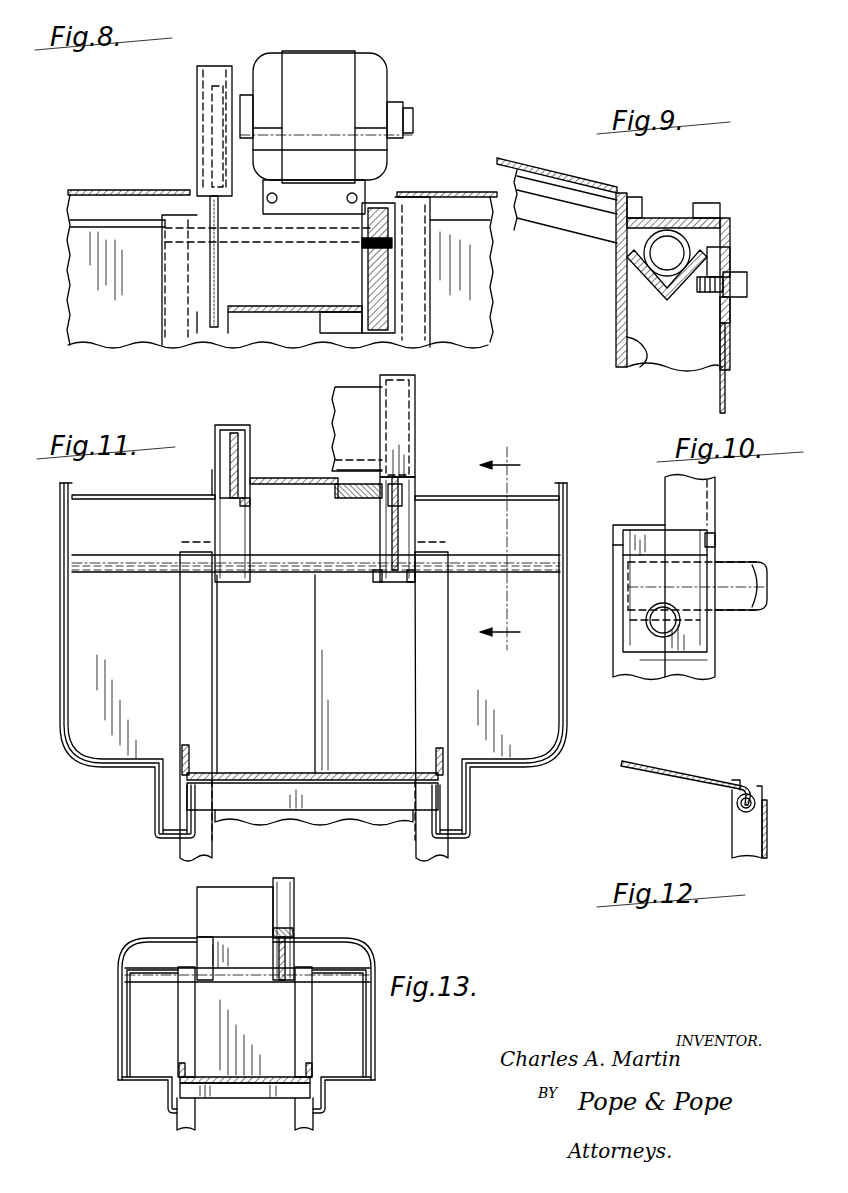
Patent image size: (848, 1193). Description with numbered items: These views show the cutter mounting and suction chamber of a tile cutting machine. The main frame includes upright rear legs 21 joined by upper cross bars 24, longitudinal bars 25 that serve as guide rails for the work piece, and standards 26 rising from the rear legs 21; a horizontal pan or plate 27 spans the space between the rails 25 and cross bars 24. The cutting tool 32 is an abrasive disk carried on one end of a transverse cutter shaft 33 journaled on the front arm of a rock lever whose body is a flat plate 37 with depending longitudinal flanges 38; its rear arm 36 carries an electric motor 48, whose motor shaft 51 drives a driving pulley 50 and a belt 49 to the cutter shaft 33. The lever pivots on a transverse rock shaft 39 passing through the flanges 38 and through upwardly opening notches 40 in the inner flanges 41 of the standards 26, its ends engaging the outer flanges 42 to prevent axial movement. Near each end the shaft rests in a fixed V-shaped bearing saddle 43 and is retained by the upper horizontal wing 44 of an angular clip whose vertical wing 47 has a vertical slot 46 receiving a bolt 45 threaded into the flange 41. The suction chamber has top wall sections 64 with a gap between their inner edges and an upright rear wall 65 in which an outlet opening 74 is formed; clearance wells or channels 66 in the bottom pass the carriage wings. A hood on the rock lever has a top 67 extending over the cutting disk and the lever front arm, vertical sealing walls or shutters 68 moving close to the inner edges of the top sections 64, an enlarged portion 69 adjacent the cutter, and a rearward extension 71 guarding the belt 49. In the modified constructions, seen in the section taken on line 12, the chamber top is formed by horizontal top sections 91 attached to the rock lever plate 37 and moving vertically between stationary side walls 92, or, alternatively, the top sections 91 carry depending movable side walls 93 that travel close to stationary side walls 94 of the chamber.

In FIG. 11, the section line 12 is at (500, 547).
In FIG. 11, the upright rear legs 21 is at (207, 838).
In FIG. 13, the upright rear legs 21 is at (178, 1125).
In FIG. 11, the upper front and rear cross bars 24 is at (312, 804).
In FIG. 13, the upper front and rear cross bars 24 is at (208, 1099).
In FIG. 11, the upper longitudinal parallel bars 25 is at (188, 745).
In FIG. 13, the upper longitudinal parallel bars 25 is at (186, 1065).
In FIG. 8, the standards 26 is at (167, 325).
In FIG. 9, the standards 26 is at (633, 370).
In FIG. 10, the standards 26 is at (697, 680).
In FIG. 12, the standards 26 is at (737, 837).
In FIG. 11, the standards 26 is at (183, 658).
In FIG. 13, the standards 26 is at (180, 998).
In FIG. 11, the horizontal pan or plate 27 is at (282, 773).
In FIG. 13, the horizontal pan or plate 27 is at (264, 1085).
In FIG. 11, the cutting tool 32 is at (401, 534).
In FIG. 13, the cutting tool 32 is at (288, 962).
In FIG. 11, the cutter shaft 33 is at (360, 500).
In FIG. 13, the cutter shaft 33 is at (273, 930).
In FIG. 8, the rear arm 36 is at (267, 253).
In FIG. 8, the flat plate 37 is at (311, 306).
In FIG. 11, the flat plate 37 is at (308, 482).
In FIG. 8, the longitudinal flanges 38 is at (227, 328).
In FIG. 11, the longitudinal flanges 38 is at (250, 500).
In FIG. 8, the rock shaft 39 is at (362, 244).
In FIG. 9, the rock shaft 39 is at (667, 253).
In FIG. 10, the rock shaft 39 is at (762, 575).
In FIG. 12, the rock shaft 39 is at (737, 805).
In FIG. 11, the rock shaft 39 is at (295, 574).
In FIG. 13, the rock shaft 39 is at (243, 983).
In FIG. 9, the notches 40 is at (695, 204).
In FIG. 10, the notches 40 is at (717, 533).
In FIG. 9, the inner flanges 41 is at (712, 214).
In FIG. 10, the inner flanges 41 is at (712, 556).
In FIG. 10, the outer flanges 42 is at (615, 565).
In FIG. 9, the V-shaped bearing saddle 43 is at (665, 295).
In FIG. 9, the upper horizontal wing 44 is at (650, 218).
In FIG. 9, the bolt 45 is at (747, 287).
In FIG. 9, the vertical slot 46 is at (721, 270).
In FIG. 9, the vertical wing 47 is at (730, 310).
In FIG. 8, the electric motor 48 is at (385, 68).
In FIG. 8, the belt 49 is at (220, 222).
In FIG. 11, the belt 49 is at (240, 440).
In FIG. 8, the driving pulley 50 is at (210, 90).
In FIG. 8, the motor shaft 51 is at (410, 120).
In FIG. 8, the top wall sections 64 is at (112, 190).
In FIG. 9, the top wall sections 64 is at (560, 165).
In FIG. 8, the rear wall 65 is at (70, 278).
In FIG. 9, the rear wall 65 is at (558, 228).
In FIG. 12, the rear wall 65 is at (767, 846).
In FIG. 11, the clearance wells or channels 66 is at (160, 812).
In FIG. 11, the hood top 67 is at (357, 429).
In FIG. 8, the sealing walls or shutters 68 is at (180, 258).
In FIG. 11, the sealing walls or shutters 68 is at (215, 466).
In FIG. 8, the enlarged hood portion 69 is at (386, 205).
In FIG. 11, the enlarged hood portion 69 is at (408, 408).
In FIG. 13, the enlarged hood portion 69 is at (285, 878).
In FIG. 8, the rearward extension 71 is at (197, 108).
In FIG. 11, the rearward extension 71 is at (216, 426).
In FIG. 8, the outlet opening 74 is at (367, 337).
In FIG. 12, the horizontal top sections 91 is at (662, 775).
In FIG. 11, the horizontal top sections 91 is at (153, 500).
In FIG. 13, the horizontal top sections 91 is at (175, 938).
In FIG. 11, the stationary side walls 92 is at (60, 631).
In FIG. 13, the depending movable side walls 93 is at (118, 1005).
In FIG. 13, the stationary side walls 94 is at (128, 1032).